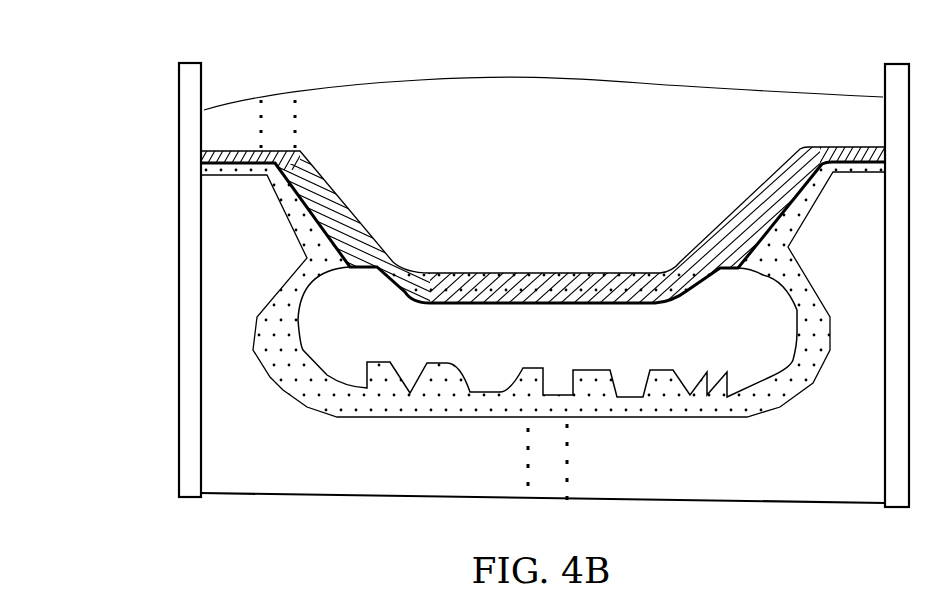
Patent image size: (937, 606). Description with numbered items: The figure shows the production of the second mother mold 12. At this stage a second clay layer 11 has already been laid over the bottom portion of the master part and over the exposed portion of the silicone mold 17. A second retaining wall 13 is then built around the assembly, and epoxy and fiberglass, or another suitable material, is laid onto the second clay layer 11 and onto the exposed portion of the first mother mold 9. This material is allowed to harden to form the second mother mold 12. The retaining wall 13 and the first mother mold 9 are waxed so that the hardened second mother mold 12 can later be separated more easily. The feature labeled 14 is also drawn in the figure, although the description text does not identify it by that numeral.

The mother mold 9 is at (252, 270).
The second clay layer 11 is at (458, 286).
The second mother mold 12 is at (590, 135).
The second retaining wall 13 is at (188, 322).
The vent channel 14 is at (283, 118).
The silicone mold 17 is at (290, 383).